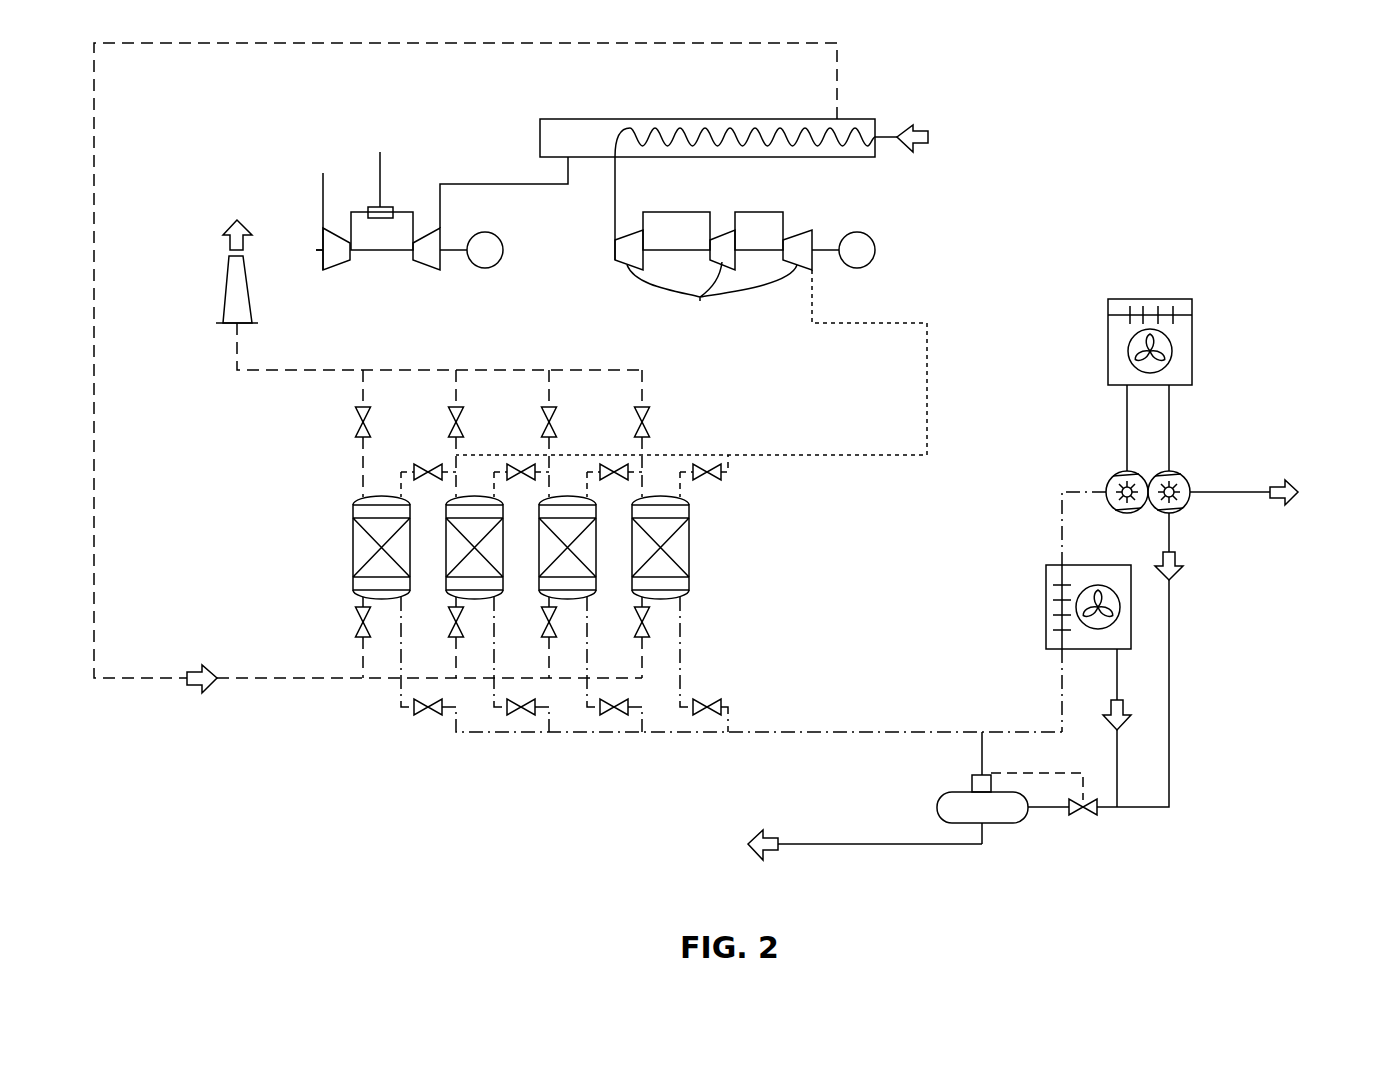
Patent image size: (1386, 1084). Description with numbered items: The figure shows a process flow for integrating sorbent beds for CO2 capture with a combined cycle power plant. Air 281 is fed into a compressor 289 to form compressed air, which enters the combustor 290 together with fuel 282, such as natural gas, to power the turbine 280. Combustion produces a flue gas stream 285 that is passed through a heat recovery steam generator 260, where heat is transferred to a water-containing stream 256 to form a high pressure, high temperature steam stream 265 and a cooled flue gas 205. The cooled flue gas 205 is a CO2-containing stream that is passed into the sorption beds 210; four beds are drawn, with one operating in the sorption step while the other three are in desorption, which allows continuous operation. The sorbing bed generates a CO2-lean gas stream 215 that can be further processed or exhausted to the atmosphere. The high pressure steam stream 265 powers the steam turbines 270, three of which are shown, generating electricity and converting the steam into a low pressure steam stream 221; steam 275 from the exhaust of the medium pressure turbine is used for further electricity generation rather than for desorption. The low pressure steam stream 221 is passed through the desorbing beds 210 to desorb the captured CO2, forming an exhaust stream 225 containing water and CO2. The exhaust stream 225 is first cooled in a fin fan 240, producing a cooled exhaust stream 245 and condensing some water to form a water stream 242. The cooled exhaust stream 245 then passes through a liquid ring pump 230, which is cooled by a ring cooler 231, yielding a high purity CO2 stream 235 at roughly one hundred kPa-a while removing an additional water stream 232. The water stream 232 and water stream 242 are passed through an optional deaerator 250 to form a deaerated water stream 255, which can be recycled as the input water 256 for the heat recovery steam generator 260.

The cooled flue gas 205 is at (276, 680).
The sorption beds 210 is at (355, 542).
The CO2-lean gas stream 215 is at (280, 372).
The low pressure steam stream 221 is at (876, 510).
The exhaust stream 225 is at (808, 734).
The liquid ring pump 230 is at (1182, 476).
The ring cooler 231 is at (1267, 355).
The water stream 232 is at (1170, 625).
The high purity CO2 stream 235 is at (1374, 504).
The fin fan 240 is at (1007, 605).
The water stream 242 is at (1140, 748).
The cooled exhaust stream 245 is at (1046, 477).
The deaerator 250 is at (1061, 892).
The deaerated water stream 255 is at (756, 892).
The water-containing stream 256 is at (997, 154).
The heat recovery steam generator 260 is at (731, 107).
The high pressure, high temperature steam stream 265 is at (615, 172).
The steam turbines 270 is at (712, 299).
The steam 275 is at (762, 212).
The turbine 280 is at (434, 232).
The air 281 is at (323, 198).
The fuel 282 is at (380, 166).
The flue gas stream 285 is at (572, 232).
The compressor 289 is at (333, 268).
The combustor 290 is at (377, 230).